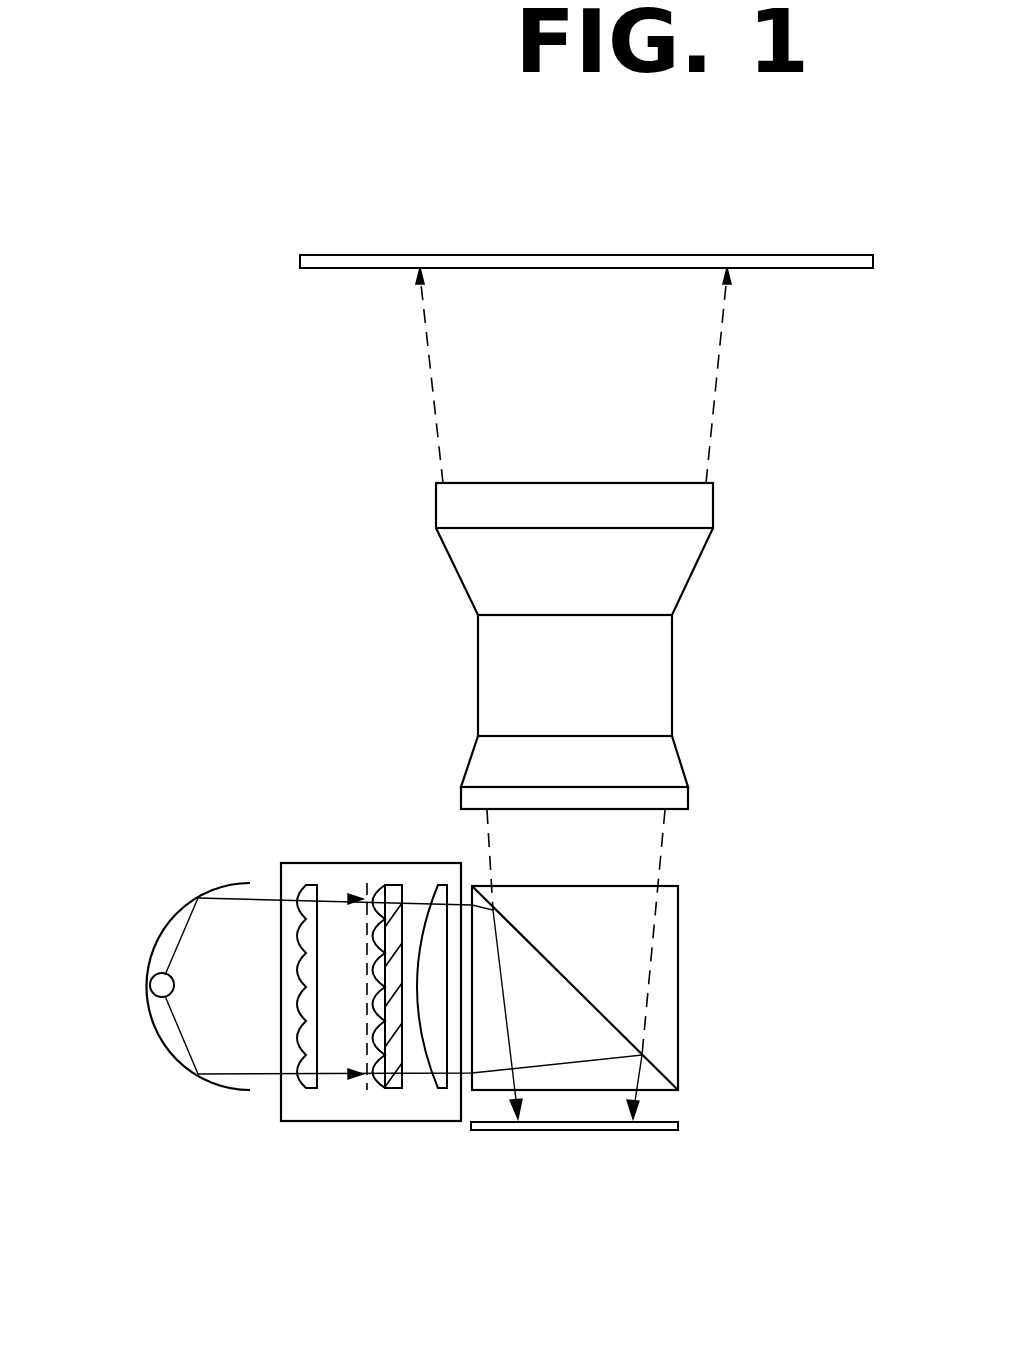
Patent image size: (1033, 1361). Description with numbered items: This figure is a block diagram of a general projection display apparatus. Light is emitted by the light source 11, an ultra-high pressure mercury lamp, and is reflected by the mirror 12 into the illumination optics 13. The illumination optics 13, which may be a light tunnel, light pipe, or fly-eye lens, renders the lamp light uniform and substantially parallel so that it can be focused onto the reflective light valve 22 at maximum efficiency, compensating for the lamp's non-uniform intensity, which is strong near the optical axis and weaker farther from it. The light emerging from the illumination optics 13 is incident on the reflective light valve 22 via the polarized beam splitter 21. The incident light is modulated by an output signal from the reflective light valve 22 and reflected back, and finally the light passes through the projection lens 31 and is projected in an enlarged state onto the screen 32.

The light source 11 is at (152, 975).
The mirror 12 is at (167, 930).
The illumination optics 13 is at (335, 862).
The polarized beam splitter 21 is at (678, 1018).
The reflective light valve 22 is at (655, 1130).
The projection lens 31 is at (487, 682).
The screen 32 is at (753, 258).